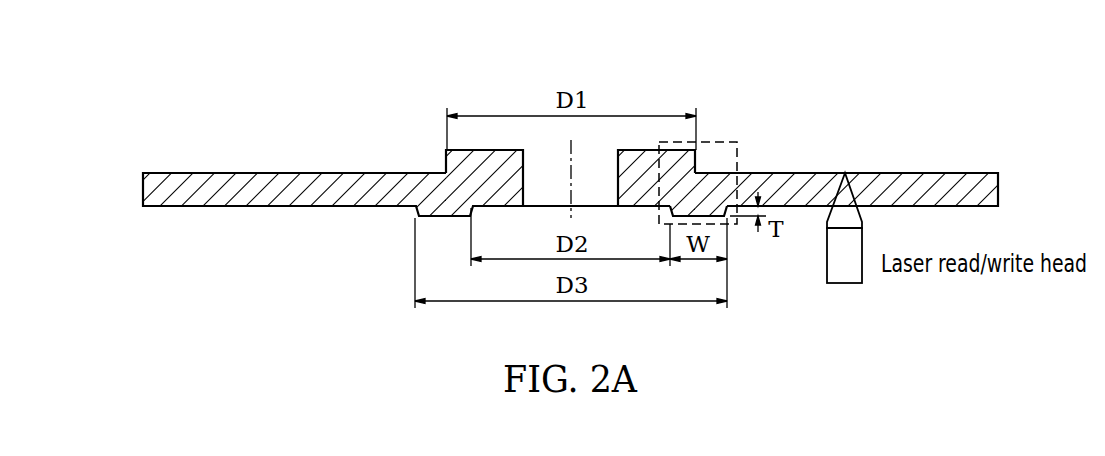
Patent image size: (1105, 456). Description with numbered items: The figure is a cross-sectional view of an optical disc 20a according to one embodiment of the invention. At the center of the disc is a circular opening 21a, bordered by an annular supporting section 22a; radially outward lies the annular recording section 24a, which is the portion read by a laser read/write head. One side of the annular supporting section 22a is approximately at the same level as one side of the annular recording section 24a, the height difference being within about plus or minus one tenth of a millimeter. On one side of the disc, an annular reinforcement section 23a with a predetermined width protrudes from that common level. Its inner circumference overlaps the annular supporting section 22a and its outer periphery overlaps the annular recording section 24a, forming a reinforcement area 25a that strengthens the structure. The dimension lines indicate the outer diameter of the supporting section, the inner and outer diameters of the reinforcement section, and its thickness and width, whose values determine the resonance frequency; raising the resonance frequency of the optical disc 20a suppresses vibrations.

The optical disc 20a is at (919, 71).
The circular opening 21a is at (546, 162).
The annular supporting section 22a is at (640, 162).
The annular reinforcement section 23a is at (703, 206).
The annular recording section 24a is at (795, 180).
The reinforcement area 25a is at (712, 142).